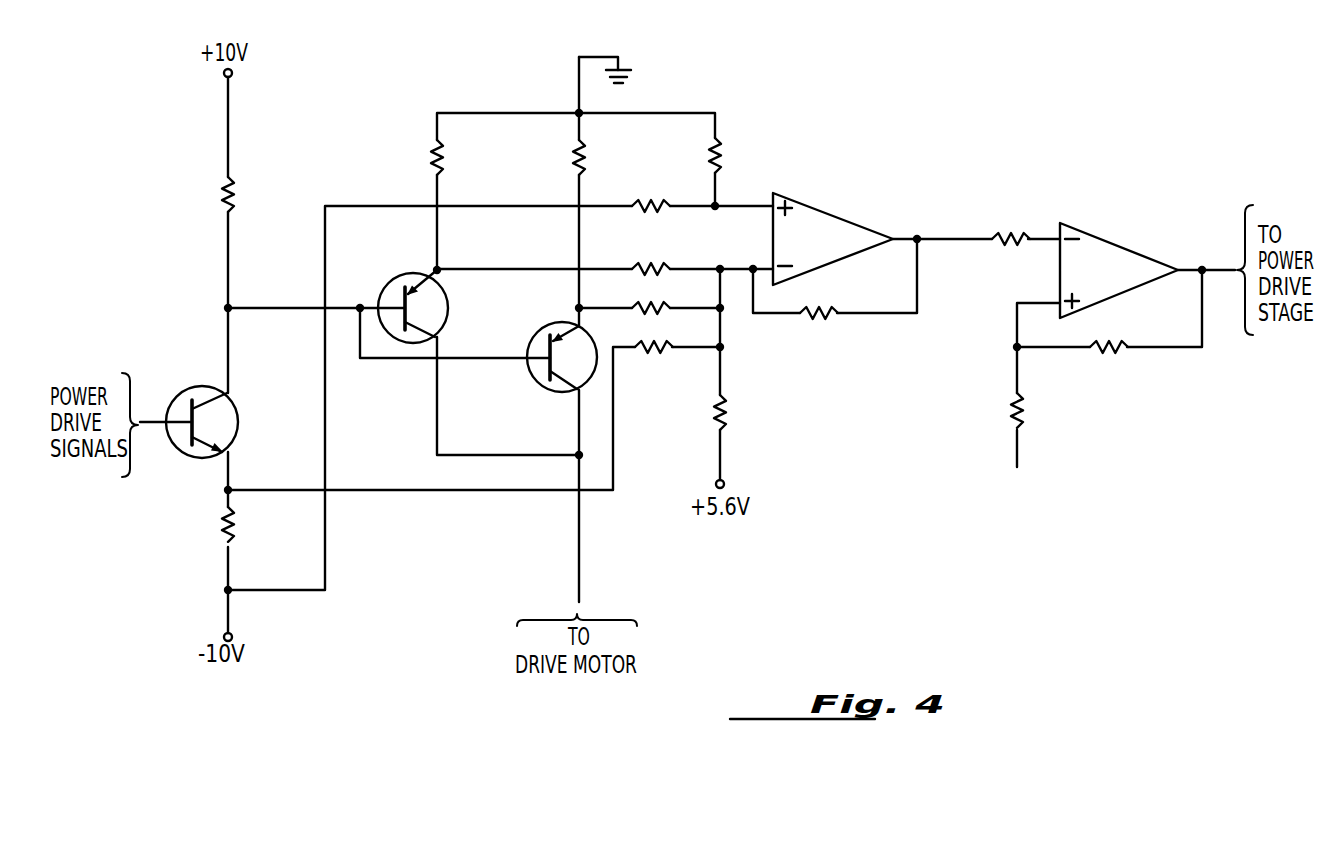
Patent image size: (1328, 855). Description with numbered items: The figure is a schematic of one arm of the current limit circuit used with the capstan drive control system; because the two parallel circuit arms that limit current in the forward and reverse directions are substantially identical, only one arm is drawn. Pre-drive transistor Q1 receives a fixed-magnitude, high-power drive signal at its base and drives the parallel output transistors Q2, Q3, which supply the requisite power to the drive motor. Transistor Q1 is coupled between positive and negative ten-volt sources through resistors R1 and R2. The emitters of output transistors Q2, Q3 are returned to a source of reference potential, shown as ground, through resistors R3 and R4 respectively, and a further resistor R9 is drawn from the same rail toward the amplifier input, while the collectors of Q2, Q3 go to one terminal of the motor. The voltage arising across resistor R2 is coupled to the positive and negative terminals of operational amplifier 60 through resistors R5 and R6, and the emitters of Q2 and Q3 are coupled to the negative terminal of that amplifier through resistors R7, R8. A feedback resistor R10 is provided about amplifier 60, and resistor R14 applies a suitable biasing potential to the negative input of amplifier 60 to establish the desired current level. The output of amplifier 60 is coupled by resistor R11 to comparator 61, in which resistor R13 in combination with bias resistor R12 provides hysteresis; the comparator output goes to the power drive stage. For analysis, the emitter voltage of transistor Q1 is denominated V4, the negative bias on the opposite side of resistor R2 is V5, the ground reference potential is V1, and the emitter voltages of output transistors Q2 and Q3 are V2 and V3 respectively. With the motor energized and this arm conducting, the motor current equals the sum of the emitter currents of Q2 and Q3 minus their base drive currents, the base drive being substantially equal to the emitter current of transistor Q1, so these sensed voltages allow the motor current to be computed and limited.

The resistor R1 is at (235, 189).
The resistor R2 is at (222, 527).
The resistor R3 is at (444, 157).
The resistor R4 is at (584, 157).
The resistor R5 is at (637, 200).
The resistor R6 is at (650, 352).
The resistor R7 is at (650, 267).
The resistor R8 is at (660, 304).
The resistor R9 is at (718, 157).
The feedback resistor R10 is at (820, 322).
The resistor R11 is at (1003, 228).
The bias resistor R12 is at (1010, 409).
The resistor R13 is at (1108, 351).
The resistor R14 is at (730, 414).
The pre-drive transistor Q1 is at (230, 429).
The output transistor Q2 is at (432, 311).
The output transistor Q3 is at (540, 376).
The reference potential V1 is at (620, 53).
The emitter voltage of output transistor Q2 V2 is at (436, 268).
The emitter voltage of output transistor Q3 V3 is at (578, 309).
The emitter voltage of transistor Q1 V4 is at (222, 490).
The negative bias voltage V5 is at (222, 590).
The operational amplifier 60 is at (818, 227).
The comparator 61 is at (1108, 262).